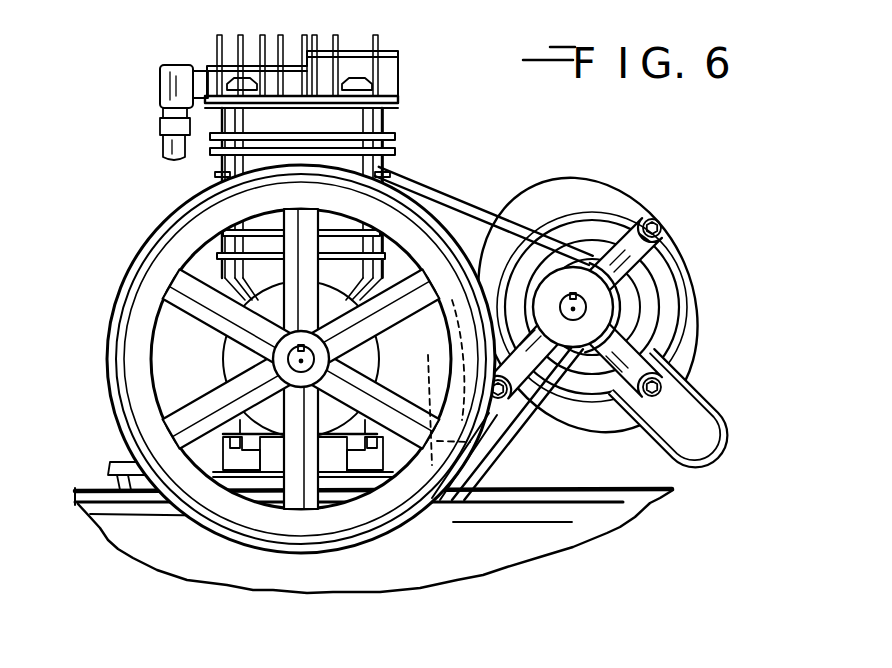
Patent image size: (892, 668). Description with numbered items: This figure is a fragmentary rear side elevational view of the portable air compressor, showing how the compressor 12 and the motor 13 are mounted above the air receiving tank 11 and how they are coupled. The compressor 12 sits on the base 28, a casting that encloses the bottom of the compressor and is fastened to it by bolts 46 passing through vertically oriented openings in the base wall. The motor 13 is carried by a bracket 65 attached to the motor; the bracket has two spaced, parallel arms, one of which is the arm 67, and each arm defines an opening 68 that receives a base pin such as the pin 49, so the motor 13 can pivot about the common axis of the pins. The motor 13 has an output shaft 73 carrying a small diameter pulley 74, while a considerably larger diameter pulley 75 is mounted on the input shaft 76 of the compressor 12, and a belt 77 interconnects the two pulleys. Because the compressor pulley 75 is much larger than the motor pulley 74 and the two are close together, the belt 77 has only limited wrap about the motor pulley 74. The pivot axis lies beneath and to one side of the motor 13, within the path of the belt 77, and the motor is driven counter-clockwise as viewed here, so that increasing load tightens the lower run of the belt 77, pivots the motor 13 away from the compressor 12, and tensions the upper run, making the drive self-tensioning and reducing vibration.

The air receiving tank 11 is at (633, 504).
The compressor 12 is at (398, 66).
The motor 13 is at (676, 237).
The base 28 is at (283, 470).
The bolts 46 is at (228, 447).
The pin 49 is at (436, 452).
The bracket 65 is at (518, 428).
The arm 67 is at (480, 437).
The opening 68 is at (438, 382).
The output shaft 73 is at (586, 304).
The small diameter pulley 74 is at (600, 420).
The larger diameter pulley 75 is at (118, 292).
The input shaft 76 is at (272, 359).
The belt 77 is at (462, 212).